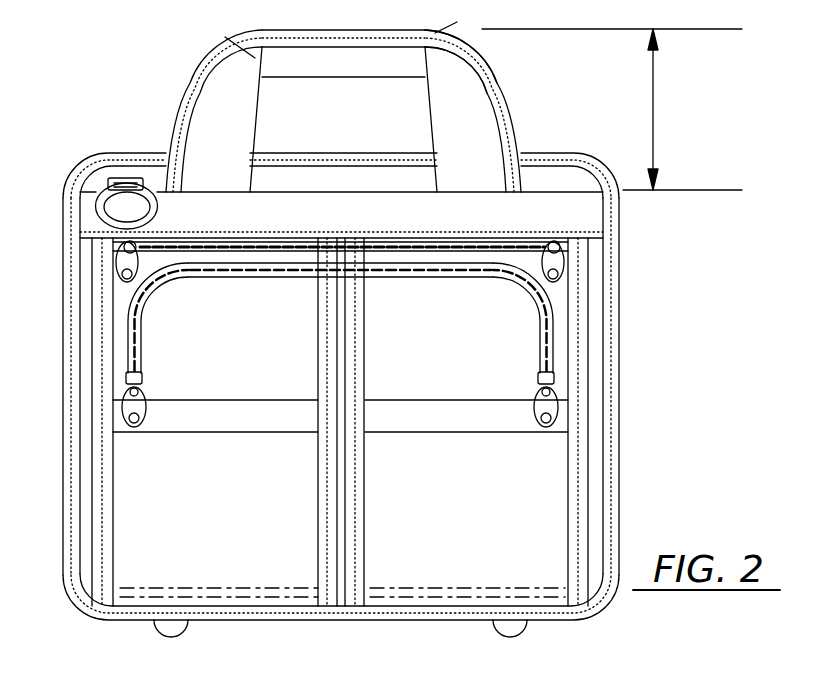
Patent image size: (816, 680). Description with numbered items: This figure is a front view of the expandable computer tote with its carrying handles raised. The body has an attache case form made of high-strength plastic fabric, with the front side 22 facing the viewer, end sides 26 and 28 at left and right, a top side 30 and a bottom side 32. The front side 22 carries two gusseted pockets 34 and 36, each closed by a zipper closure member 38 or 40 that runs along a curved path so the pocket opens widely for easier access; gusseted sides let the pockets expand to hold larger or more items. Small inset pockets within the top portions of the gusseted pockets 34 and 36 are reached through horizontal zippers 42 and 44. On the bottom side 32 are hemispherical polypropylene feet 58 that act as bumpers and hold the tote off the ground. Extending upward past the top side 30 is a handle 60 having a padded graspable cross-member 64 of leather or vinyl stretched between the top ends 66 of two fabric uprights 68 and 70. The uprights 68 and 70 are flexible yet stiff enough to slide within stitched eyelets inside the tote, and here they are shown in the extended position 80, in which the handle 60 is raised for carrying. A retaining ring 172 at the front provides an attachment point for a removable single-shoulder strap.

The front side 22 is at (535, 575).
The end side 26 is at (63, 425).
The end side 28 is at (620, 462).
The top side 30 is at (535, 150).
The bottom side 32 is at (228, 622).
The gusseted pocket 34 is at (223, 498).
The gusseted pocket 36 is at (470, 500).
The zipper closure member 38 is at (143, 345).
The zipper closure member 40 is at (538, 342).
The horizontal zipper 42 is at (185, 250).
The horizontal zipper 44 is at (447, 240).
The feet 58 is at (172, 628).
The handle 60 is at (488, 100).
The graspable cross-member 64 is at (350, 76).
The top ends 66 is at (343, 31).
The upright 68 is at (232, 156).
The upright 70 is at (481, 156).
The extended position 80 is at (655, 100).
The retaining ring 172 is at (157, 210).